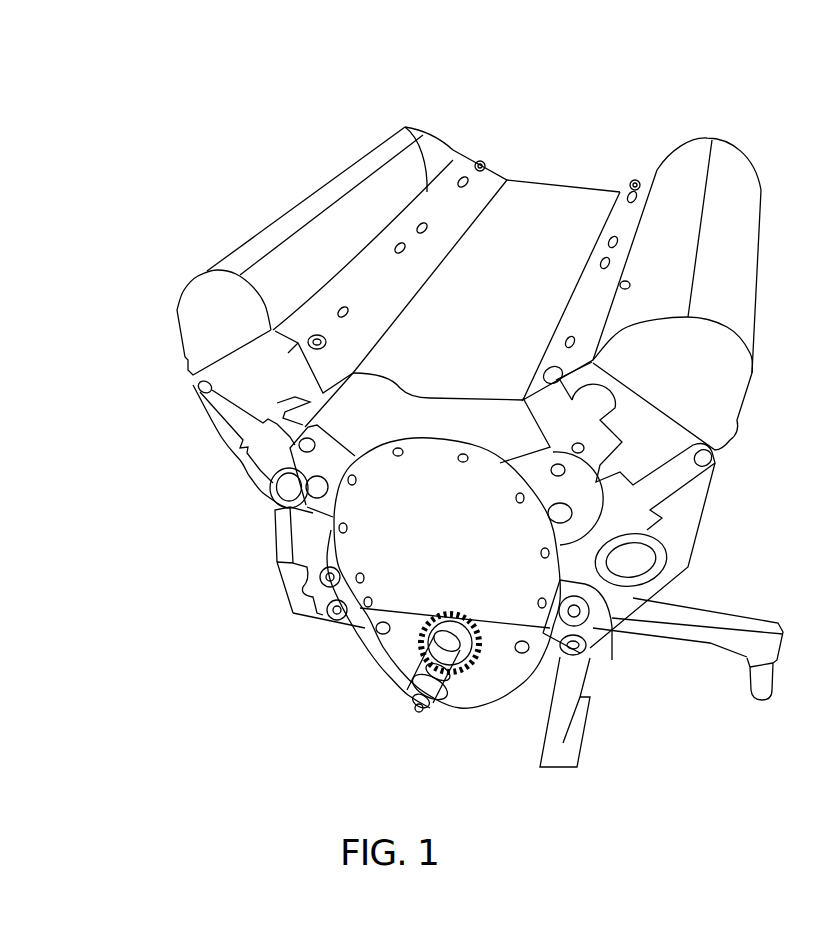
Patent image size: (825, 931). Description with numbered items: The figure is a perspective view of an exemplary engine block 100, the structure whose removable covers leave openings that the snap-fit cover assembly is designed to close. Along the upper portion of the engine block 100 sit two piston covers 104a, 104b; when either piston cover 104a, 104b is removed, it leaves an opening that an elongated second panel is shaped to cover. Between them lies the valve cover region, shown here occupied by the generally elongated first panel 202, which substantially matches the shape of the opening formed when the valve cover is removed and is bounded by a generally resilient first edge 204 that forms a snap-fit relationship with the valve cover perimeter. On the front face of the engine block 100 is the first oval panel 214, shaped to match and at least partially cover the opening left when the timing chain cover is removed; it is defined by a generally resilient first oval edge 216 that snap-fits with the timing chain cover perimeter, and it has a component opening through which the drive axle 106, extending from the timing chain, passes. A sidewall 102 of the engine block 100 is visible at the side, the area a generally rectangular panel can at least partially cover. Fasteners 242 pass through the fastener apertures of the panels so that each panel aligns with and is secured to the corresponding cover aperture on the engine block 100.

The engine block 100 is at (214, 101).
The sidewall 102 is at (286, 392).
The piston cover 104a is at (354, 167).
The piston cover 104b is at (720, 153).
The drive axle 106 is at (441, 706).
The first panel 202 is at (521, 298).
The first edge 204 is at (403, 130).
The first oval panel 214 is at (460, 568).
The first oval edge 216 is at (612, 660).
The fastener 242 is at (478, 158).